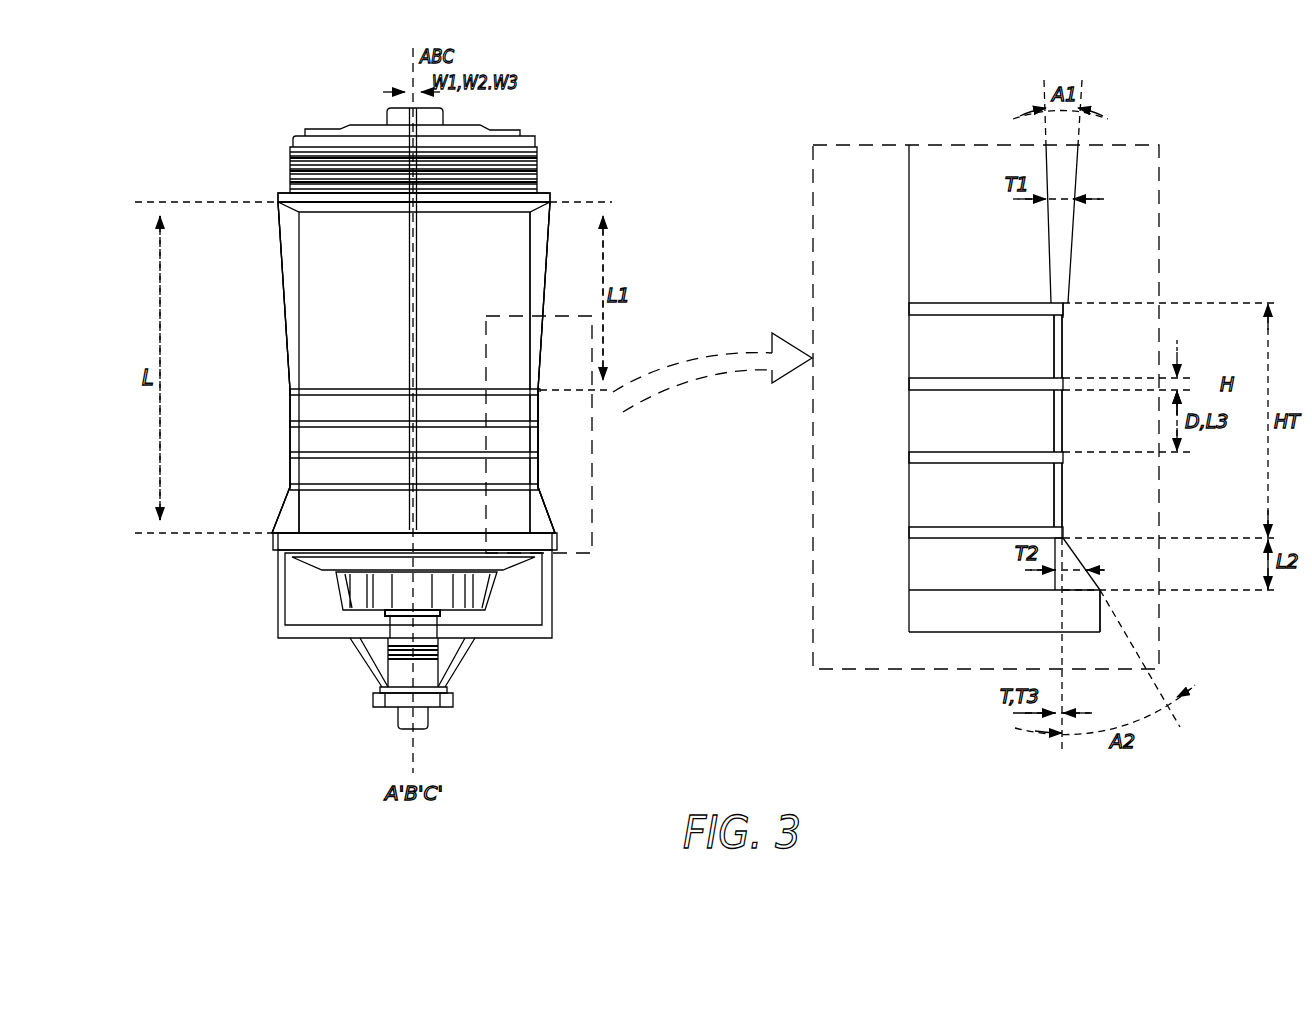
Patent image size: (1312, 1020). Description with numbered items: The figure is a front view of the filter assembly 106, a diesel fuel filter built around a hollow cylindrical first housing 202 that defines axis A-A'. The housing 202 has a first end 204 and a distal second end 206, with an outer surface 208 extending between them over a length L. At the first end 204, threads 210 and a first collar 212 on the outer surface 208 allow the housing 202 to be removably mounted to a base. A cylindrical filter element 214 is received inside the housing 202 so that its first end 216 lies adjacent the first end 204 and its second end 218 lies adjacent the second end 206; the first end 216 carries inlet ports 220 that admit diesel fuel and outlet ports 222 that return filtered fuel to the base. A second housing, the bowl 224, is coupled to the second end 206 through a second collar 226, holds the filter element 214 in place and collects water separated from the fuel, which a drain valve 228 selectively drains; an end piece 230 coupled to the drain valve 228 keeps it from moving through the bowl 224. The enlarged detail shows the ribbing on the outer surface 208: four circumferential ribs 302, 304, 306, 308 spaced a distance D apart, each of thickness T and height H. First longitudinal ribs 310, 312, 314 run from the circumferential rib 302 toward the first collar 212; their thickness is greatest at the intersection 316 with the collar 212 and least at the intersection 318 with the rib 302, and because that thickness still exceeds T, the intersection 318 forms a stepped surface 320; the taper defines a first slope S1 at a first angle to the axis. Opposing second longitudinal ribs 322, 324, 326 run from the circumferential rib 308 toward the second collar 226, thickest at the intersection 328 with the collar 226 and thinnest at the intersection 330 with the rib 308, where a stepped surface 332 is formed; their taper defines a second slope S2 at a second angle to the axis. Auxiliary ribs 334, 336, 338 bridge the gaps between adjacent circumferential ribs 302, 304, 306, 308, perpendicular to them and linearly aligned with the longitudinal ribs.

The filter assembly 106 is at (222, 92).
The first housing 202 is at (325, 310).
The first end 204 is at (287, 157).
The second end 206 is at (275, 520).
The outer surface 208 is at (303, 352).
The threads 210 is at (292, 168).
The first collar 212 is at (280, 195).
The filter element 214 is at (340, 597).
The first end 216 is at (291, 137).
The second end 218 is at (320, 570).
The inlet ports 220 is at (313, 128).
The outlet ports 222 is at (384, 118).
The second housing 224 is at (277, 630).
The second collar 226 is at (281, 545).
The drain valve 228 is at (399, 718).
The end piece 230 is at (372, 700).
The circumferential rib 302 is at (291, 392).
The circumferential rib 304 is at (291, 424).
The circumferential rib 306 is at (291, 455).
The circumferential rib 308 is at (291, 487).
The first longitudinal rib 310 is at (531, 240).
The first longitudinal rib 312 is at (410, 290).
The first longitudinal rib 314 is at (292, 258).
The intersection 316 is at (556, 194).
The intersection 318 is at (542, 386).
The stepped surface 320 is at (1066, 318).
The second longitudinal rib 322 is at (545, 526).
The second longitudinal rib 324 is at (430, 505).
The second longitudinal rib 326 is at (292, 502).
The intersection 328 is at (1103, 594).
The intersection 330 is at (1067, 540).
The stepped surface 332 is at (1067, 532).
The auxiliary rib 334 is at (535, 415).
The auxiliary rib 336 is at (535, 447).
The auxiliary rib 338 is at (535, 475).
The first slope S1 is at (1072, 277).
The second slope S2 is at (1087, 554).